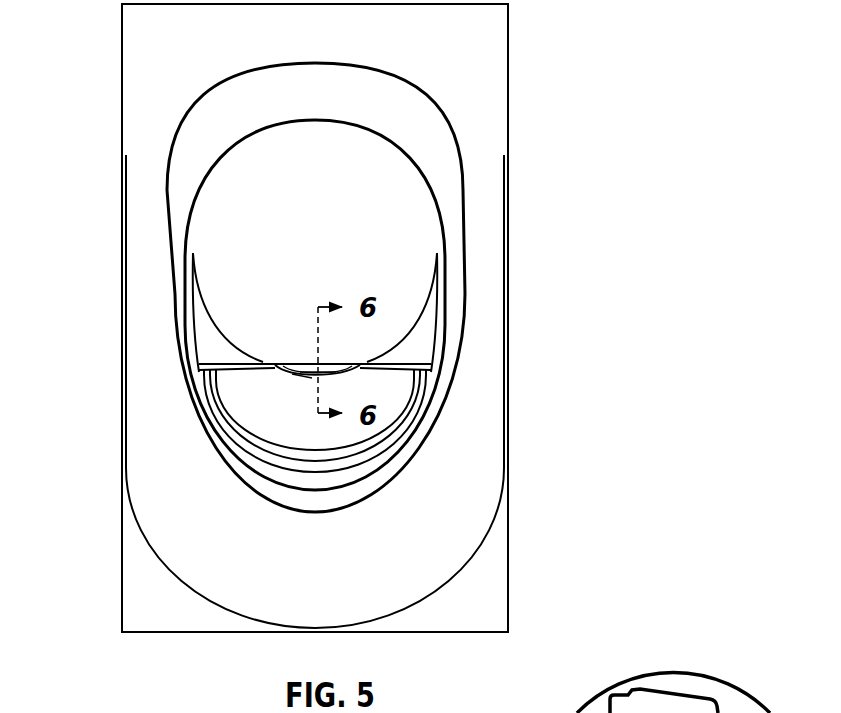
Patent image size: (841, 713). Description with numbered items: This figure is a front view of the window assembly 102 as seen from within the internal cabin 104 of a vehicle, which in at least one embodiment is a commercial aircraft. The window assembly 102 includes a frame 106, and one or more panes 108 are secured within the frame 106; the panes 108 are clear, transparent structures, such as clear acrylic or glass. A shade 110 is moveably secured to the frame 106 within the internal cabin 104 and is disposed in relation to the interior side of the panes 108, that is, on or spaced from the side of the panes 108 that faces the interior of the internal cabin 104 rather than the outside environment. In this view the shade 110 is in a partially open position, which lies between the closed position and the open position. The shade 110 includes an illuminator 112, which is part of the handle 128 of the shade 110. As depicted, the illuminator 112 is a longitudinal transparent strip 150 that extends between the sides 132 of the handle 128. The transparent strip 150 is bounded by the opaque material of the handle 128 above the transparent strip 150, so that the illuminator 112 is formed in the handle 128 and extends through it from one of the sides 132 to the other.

The window assembly 102 is at (424, 78).
The internal cabin 104 is at (140, 606).
The frame 106 is at (426, 394).
The pane 108 is at (243, 395).
The shade 110 is at (392, 212).
The illuminator 112 is at (337, 373).
The handle 128 is at (337, 358).
The sides of the handle 132 is at (245, 365).
The longitudinal transparent strip 150 is at (305, 376).